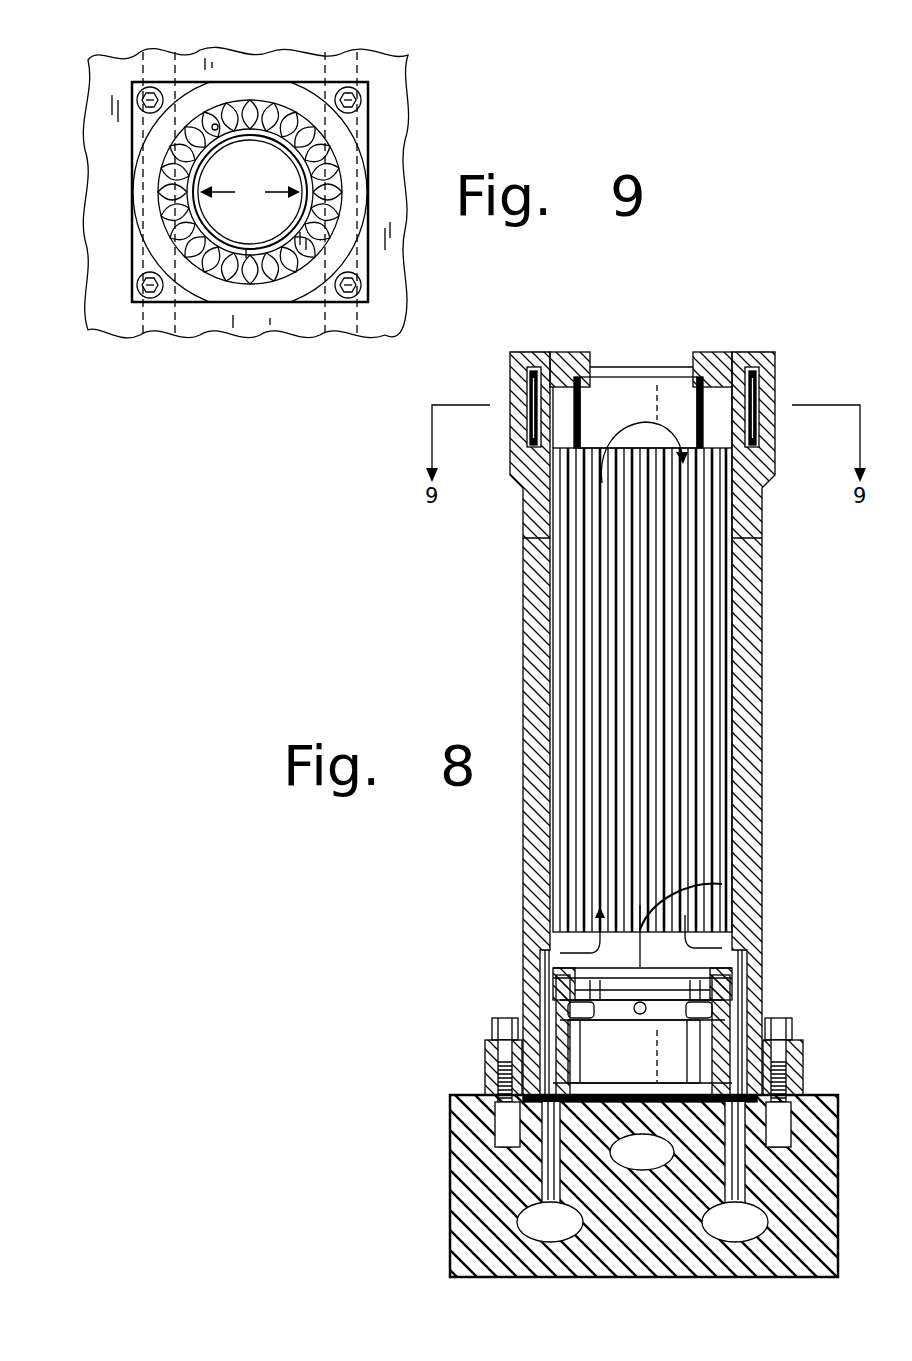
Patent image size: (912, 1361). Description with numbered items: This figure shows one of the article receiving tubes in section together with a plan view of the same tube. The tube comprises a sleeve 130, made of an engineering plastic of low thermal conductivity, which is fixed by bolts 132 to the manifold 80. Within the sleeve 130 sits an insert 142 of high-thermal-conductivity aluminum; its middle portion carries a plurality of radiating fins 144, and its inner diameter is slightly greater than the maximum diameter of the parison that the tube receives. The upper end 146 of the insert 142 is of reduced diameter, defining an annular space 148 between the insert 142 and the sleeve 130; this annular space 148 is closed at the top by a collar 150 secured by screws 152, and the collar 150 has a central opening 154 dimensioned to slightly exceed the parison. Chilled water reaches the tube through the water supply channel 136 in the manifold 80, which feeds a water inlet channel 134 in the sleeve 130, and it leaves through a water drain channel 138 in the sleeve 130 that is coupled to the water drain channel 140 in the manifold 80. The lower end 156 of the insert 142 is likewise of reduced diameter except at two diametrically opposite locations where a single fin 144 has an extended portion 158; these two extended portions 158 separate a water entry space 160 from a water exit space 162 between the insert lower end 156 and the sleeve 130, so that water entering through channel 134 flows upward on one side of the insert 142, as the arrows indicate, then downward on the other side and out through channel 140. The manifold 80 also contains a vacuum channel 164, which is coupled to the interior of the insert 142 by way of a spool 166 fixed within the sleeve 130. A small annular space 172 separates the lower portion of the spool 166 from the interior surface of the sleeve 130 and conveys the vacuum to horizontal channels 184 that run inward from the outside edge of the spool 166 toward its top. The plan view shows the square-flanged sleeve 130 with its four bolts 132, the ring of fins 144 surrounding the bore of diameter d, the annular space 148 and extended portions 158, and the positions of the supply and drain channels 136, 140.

In FIG. 9, the manifold 80 is at (379, 78).
In FIG. 8, the manifold 80 is at (820, 1096).
In FIG. 8, the sleeve 130 is at (749, 671).
In FIG. 9, the bolts 132 is at (137, 94).
In FIG. 8, the bolts 132 is at (500, 1018).
In FIG. 8, the water inlet channel 134 is at (553, 982).
In FIG. 9, the water supply channel 136 is at (162, 330).
In FIG. 8, the water supply channel 136 is at (550, 1224).
In FIG. 8, the water drain channel 138 is at (746, 966).
In FIG. 9, the water drain channel 140 is at (345, 330).
In FIG. 8, the water drain channel 140 is at (735, 1224).
In FIG. 8, the insert 142 is at (716, 623).
In FIG. 9, the radiating fins 144 is at (280, 116).
In FIG. 8, the radiating fins 144 is at (690, 572).
In FIG. 8, the upper end 146 is at (650, 385).
In FIG. 9, the annular space 148 is at (212, 300).
In FIG. 8, the annular space 148 is at (722, 425).
In FIG. 8, the collar 150 is at (574, 362).
In FIG. 8, the screws 152 is at (745, 365).
In FIG. 8, the central opening 154 is at (605, 360).
In FIG. 8, the lower end 156 is at (553, 952).
In FIG. 9, the extended portion 158 is at (215, 124).
In FIG. 8, the extended portion 158 is at (722, 884).
In FIG. 8, the water entry space 160 is at (588, 916).
In FIG. 8, the water exit space 162 is at (688, 935).
In FIG. 8, the vacuum channel 164 is at (642, 1154).
In FIG. 8, the spool 166 is at (700, 1036).
In FIG. 8, the small annular space 172 is at (745, 986).
In FIG. 8, the horizontal channels 184 is at (635, 1004).